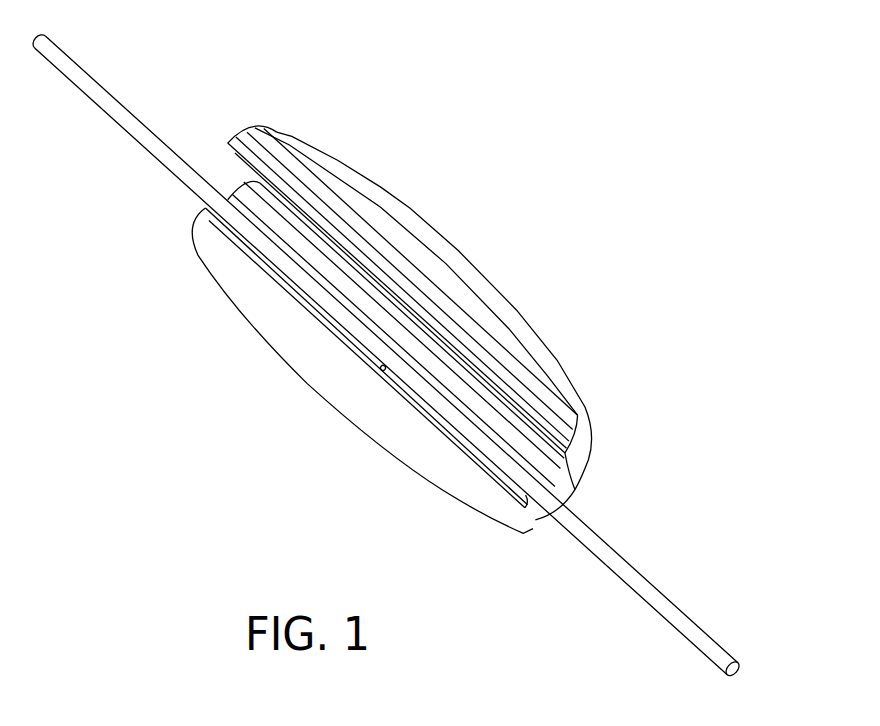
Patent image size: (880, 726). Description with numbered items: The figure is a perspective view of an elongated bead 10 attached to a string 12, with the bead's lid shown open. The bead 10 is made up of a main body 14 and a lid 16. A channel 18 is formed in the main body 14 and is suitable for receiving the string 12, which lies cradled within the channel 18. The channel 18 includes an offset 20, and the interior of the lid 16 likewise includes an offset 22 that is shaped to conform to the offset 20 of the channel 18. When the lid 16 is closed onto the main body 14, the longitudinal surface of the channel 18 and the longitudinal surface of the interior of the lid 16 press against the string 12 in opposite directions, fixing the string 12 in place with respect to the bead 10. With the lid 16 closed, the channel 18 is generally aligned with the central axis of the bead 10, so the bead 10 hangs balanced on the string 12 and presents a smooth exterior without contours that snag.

The bead 10 is at (400, 160).
The string 12 is at (623, 567).
The main body 14 is at (343, 395).
The lid 16 is at (530, 337).
The channel 18 is at (535, 520).
The offset 20 is at (402, 352).
The offset 22 is at (398, 297).